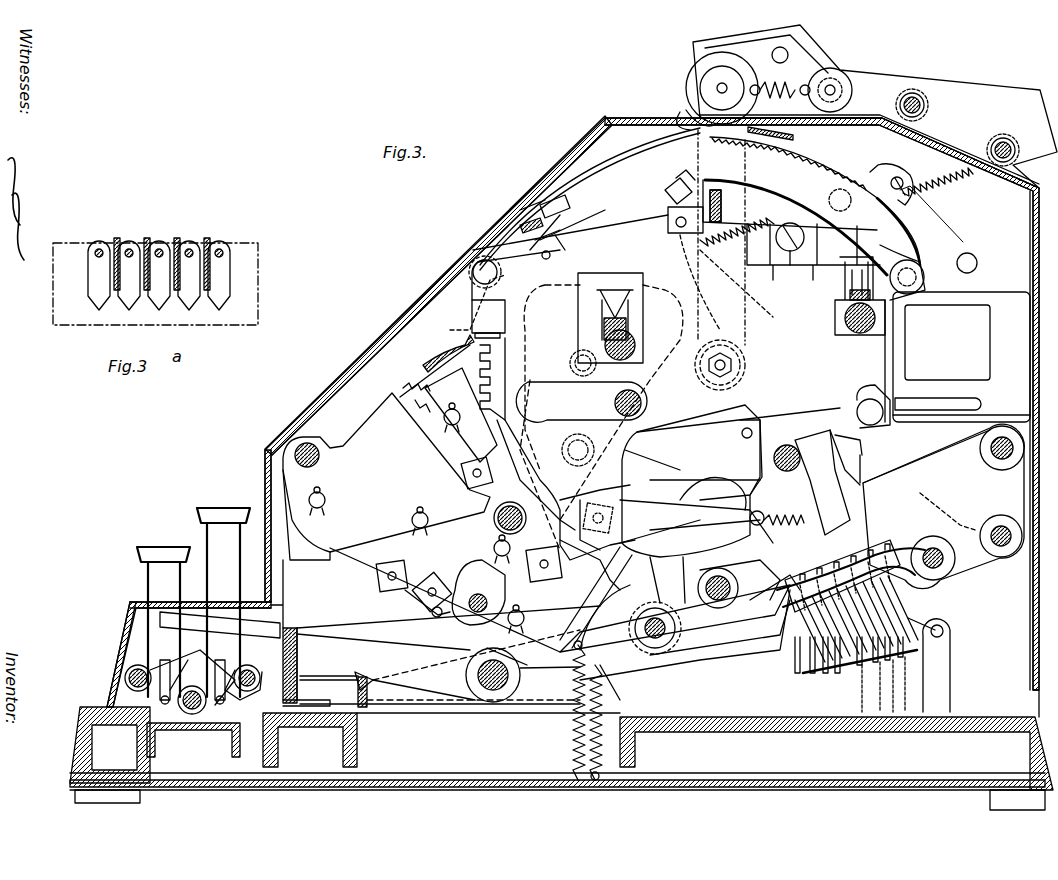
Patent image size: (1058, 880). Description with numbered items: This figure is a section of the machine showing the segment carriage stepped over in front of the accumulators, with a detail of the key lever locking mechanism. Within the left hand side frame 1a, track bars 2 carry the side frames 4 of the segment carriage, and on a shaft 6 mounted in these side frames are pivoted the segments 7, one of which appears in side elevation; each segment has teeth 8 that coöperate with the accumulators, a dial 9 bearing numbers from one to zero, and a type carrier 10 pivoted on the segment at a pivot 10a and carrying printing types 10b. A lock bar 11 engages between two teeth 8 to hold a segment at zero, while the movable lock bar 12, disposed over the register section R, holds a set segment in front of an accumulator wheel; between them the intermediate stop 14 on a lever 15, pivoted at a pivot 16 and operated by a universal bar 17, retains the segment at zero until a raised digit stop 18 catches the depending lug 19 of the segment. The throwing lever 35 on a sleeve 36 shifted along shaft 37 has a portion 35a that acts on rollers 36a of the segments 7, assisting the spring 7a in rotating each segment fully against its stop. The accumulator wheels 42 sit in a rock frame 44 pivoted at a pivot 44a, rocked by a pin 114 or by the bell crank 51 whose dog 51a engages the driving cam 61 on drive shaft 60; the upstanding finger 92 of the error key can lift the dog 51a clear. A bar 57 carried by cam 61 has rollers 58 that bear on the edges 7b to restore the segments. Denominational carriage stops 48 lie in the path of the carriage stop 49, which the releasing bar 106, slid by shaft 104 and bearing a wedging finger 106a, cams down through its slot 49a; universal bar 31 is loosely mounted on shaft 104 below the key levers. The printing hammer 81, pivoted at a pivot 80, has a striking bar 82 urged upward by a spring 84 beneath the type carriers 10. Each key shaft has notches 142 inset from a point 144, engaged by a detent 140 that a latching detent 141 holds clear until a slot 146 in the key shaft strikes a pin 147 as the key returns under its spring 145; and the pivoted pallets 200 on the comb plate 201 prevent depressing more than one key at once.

In FIG. 3, the left hand side frame 1a is at (622, 120).
In FIG. 3, the track bars 2 is at (840, 318).
In FIG. 3, the side frames of the segment carriage 4 is at (588, 233).
In FIG. 3, the shaft 6 is at (740, 368).
In FIG. 3, the segments 7 is at (612, 175).
In FIG. 3, the spring 7a is at (765, 312).
In FIG. 3, the edges 7b is at (680, 505).
In FIG. 3, the teeth 8 is at (550, 246).
In FIG. 3, the dial 9 is at (612, 178).
In FIG. 3, the type carriers 10 is at (809, 237).
In FIG. 3, the pivot 10a is at (895, 262).
In FIG. 3, the printing types 10b is at (835, 162).
In FIG. 3, the lock bar 11 is at (518, 225).
In FIG. 3, the movable lock bar 12 is at (460, 365).
In FIG. 3, the intermediate stop 14 is at (800, 625).
In FIG. 3, the lever 15 is at (675, 618).
In FIG. 3, the pivot 16 is at (650, 615).
In FIG. 3, the universal bar 17 is at (590, 650).
In FIG. 3, the digit stops 18 is at (880, 520).
In FIG. 3, the depending lugs 19 is at (762, 593).
In FIG. 3, the universal bar 31 is at (380, 680).
In FIG. 3, the throwing lever 35 is at (895, 478).
In FIG. 3, the portion of throwing lever 35a is at (840, 440).
In FIG. 3, the sleeve 36 is at (990, 452).
In FIG. 3, the rollers 36a is at (865, 400).
In FIG. 3, the shaft 37 is at (1000, 460).
In FIG. 3, the accumulator wheels 42 is at (470, 452).
In FIG. 3, the rock frame 44 is at (425, 390).
In FIG. 3, the pivot 44a is at (498, 568).
In FIG. 3, the denominational carriage stops 48 is at (530, 540).
In FIG. 3, the carriage stop 49 is at (530, 505).
In FIG. 3, the slot 49a is at (580, 355).
In FIG. 3, the bell crank 51 is at (691, 481).
In FIG. 3, the dog 51a is at (680, 488).
In FIG. 3, the bar 57 is at (760, 445).
In FIG. 3, the rollers 58 is at (832, 478).
In FIG. 3, the drive shaft 60 is at (725, 578).
In FIG. 3, the driving cam 61 is at (735, 475).
In FIG. 3, the pivot 80 is at (830, 218).
In FIG. 3, the printing hammer 81 is at (905, 170).
In FIG. 3, the striking bar 82 is at (740, 190).
In FIG. 3, the spring 84 is at (945, 218).
In FIG. 3, the upstanding finger 92 is at (670, 582).
In FIG. 3, the shaft 104 is at (478, 677).
In FIG. 3, the releasing bar 106 is at (990, 350).
In FIG. 3, the wedging finger 106a is at (940, 305).
In FIG. 3, the pin 114 is at (468, 610).
In FIG. 3, the detent 140 is at (140, 700).
In FIG. 3, the latching detent 141 is at (190, 665).
In FIG. 3, the notches 142 is at (170, 690).
In FIG. 3, the point 144 is at (130, 668).
In FIG. 3, the spring 145 is at (605, 742).
In FIG. 3, the slot 146 is at (128, 712).
In FIG. 3, the pin 147 is at (168, 705).
In FIG. 3A, the pivoted pallets 200 is at (156, 245).
In FIG. 3, the pivoted pallets 200 is at (300, 640).
In FIG. 3A, the comb plate 201 is at (244, 250).
In FIG. 3, the comb plate 201 is at (290, 628).
In FIG. 3, the register section R is at (421, 522).